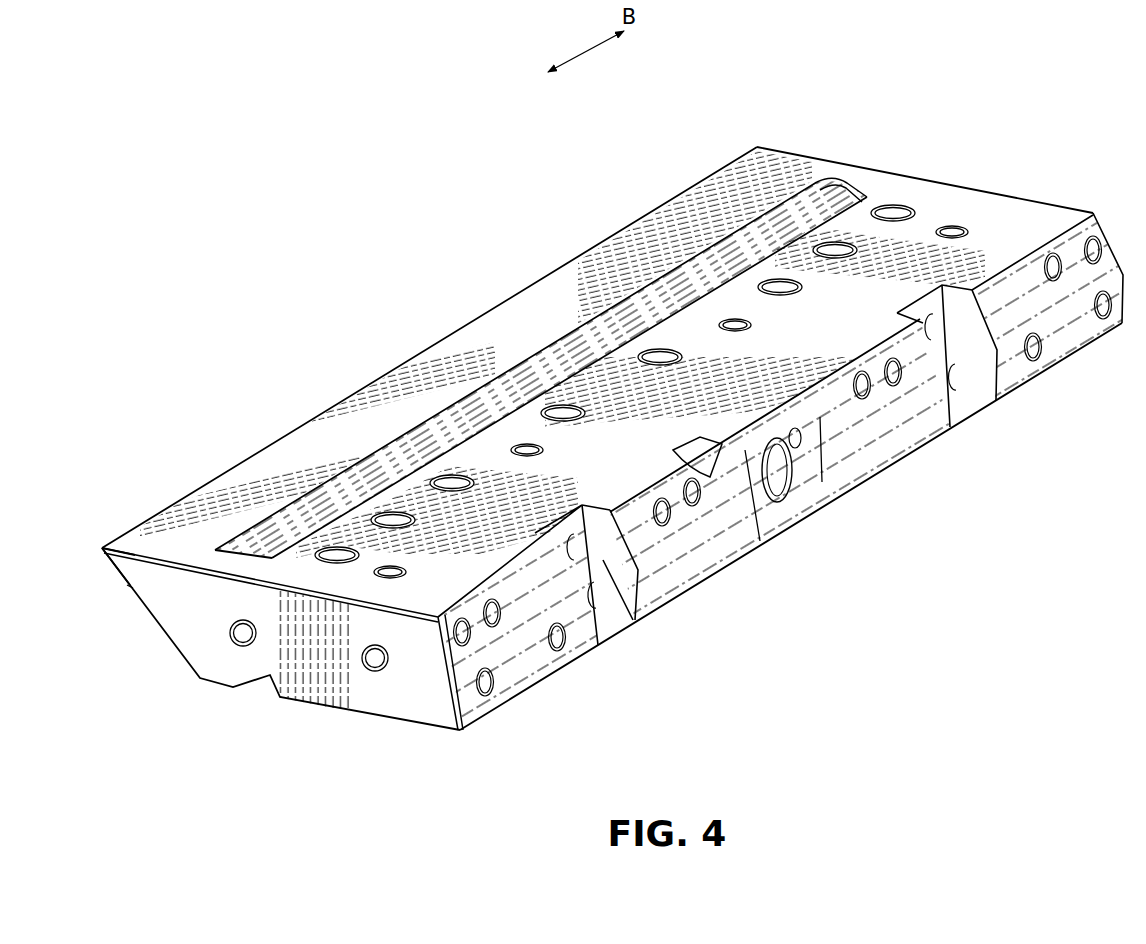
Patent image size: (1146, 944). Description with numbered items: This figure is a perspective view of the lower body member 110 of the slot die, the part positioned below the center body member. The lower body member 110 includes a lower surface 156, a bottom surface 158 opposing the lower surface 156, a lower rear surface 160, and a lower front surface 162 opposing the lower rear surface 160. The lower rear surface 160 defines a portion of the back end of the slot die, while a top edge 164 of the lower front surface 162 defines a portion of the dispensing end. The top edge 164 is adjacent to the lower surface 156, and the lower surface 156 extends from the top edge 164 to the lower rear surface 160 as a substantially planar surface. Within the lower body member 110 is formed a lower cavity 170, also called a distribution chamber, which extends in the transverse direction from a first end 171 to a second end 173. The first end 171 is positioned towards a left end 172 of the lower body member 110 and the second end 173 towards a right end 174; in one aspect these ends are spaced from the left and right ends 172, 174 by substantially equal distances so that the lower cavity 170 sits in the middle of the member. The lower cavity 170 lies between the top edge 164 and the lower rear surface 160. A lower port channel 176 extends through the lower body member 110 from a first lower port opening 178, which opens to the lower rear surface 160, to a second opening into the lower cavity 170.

The lower body member 110 is at (205, 128).
The lower surface 156 is at (481, 338).
The bottom surface 158 is at (368, 720).
The lower rear surface 160 is at (658, 543).
The lower front surface 162 is at (102, 575).
The top edge 164 is at (118, 530).
The lower cavity 170 is at (620, 338).
The first end 171 is at (852, 190).
The left end 172 is at (945, 174).
The second end 173 is at (262, 546).
The right end 174 is at (190, 612).
The lower port channel 176 is at (772, 470).
The first lower port opening 178 is at (782, 494).